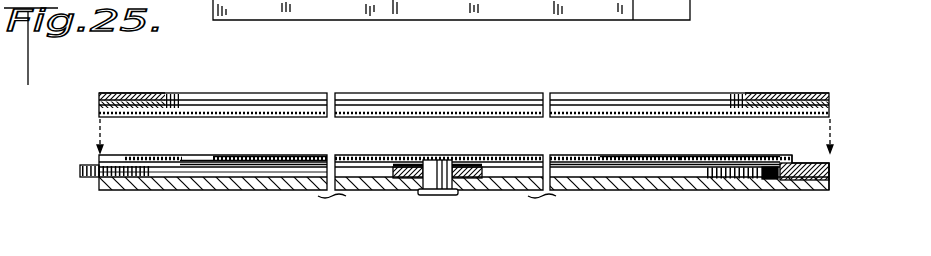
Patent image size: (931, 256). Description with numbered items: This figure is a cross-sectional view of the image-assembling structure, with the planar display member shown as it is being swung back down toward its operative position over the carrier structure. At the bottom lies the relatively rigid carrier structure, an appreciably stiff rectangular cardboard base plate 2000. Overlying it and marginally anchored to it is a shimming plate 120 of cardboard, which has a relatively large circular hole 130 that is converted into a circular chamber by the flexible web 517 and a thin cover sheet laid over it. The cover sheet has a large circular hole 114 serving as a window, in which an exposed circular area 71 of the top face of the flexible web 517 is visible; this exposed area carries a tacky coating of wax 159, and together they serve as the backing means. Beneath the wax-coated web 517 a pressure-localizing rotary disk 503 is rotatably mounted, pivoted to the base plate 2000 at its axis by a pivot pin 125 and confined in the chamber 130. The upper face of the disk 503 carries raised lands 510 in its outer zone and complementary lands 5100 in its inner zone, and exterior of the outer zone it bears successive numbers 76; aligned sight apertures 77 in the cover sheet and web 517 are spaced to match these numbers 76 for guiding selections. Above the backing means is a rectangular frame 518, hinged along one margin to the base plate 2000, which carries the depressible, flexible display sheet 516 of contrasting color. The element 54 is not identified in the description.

The display sheet 516 is at (477, 103).
The rectangular frame 518 is at (99, 103).
The flexible web 517 is at (110, 158).
The layer 54 is at (127, 157).
The sight apertures 77 is at (183, 156).
The successive numbers 76 is at (195, 165).
The circular hole 114 is at (240, 160).
The lands 510 is at (276, 171).
The lands 5100 is at (370, 161).
The pivot pin 125 is at (432, 177).
The tacky coating of wax 159 is at (597, 136).
The exposed circular area 71 is at (608, 162).
The circular hole 130 is at (763, 168).
The rotary disk 503 is at (630, 172).
The shimming plate 120 is at (838, 160).
The base plate 2000 is at (812, 200).